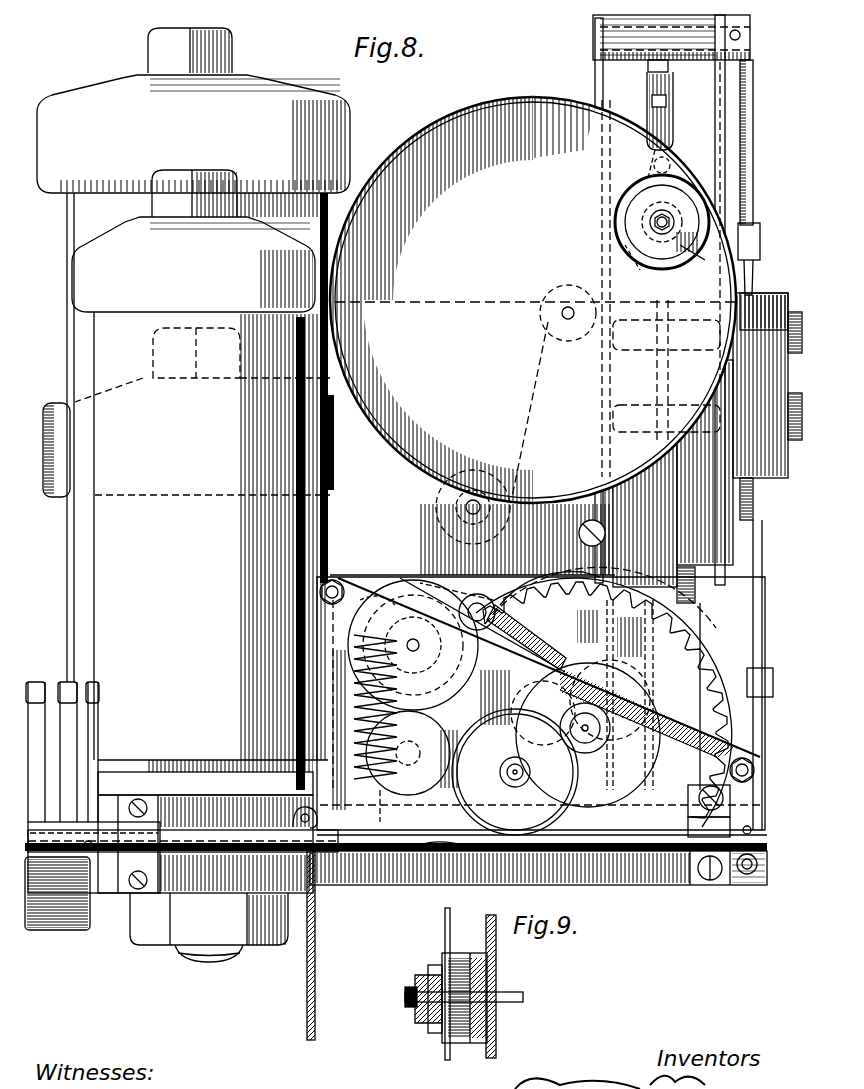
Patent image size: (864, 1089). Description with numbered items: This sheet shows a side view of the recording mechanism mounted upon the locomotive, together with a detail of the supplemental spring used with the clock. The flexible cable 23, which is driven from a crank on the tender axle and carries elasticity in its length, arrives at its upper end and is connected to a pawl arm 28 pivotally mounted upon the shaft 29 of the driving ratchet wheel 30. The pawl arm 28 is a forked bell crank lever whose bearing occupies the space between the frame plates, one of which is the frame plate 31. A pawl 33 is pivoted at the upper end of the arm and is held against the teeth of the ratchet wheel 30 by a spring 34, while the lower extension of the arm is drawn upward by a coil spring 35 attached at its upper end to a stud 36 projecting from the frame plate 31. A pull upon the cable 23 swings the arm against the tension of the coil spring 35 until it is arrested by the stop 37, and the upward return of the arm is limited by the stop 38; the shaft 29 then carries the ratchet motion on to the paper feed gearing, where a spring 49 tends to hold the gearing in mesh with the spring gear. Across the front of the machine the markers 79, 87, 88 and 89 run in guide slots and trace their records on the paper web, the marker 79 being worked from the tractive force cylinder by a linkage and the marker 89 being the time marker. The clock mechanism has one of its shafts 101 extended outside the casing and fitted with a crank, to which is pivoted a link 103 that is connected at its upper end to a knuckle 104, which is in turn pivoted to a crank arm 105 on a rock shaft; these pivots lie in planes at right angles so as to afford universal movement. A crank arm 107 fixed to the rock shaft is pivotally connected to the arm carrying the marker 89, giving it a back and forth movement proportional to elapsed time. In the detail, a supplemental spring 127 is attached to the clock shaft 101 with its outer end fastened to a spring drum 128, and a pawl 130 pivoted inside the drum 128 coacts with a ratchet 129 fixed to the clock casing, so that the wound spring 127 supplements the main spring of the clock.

In FIG. 8, the cable 23 is at (305, 1001).
In FIG. 8, the pawl arm 28 is at (183, 830).
In FIG. 8, the shaft 29 is at (600, 736).
In FIG. 8, the driving ratchet wheel 30 is at (604, 697).
In FIG. 8, the frame plate 31 is at (318, 617).
In FIG. 8, the pawl 33 is at (467, 569).
In FIG. 8, the spring 34 is at (549, 663).
In FIG. 8, the coil spring 35 is at (366, 766).
In FIG. 8, the stud 36 is at (372, 618).
In FIG. 8, the stop 37 is at (396, 860).
In FIG. 8, the stop 38 is at (437, 850).
In FIG. 8, the spring 49 is at (735, 738).
In FIG. 8, the marker 79 is at (750, 506).
In FIG. 8, the marker 87 is at (696, 592).
In FIG. 8, the marker 88 is at (797, 393).
In FIG. 8, the marker 89 is at (793, 313).
In FIG. 8, the shaft 101 is at (672, 252).
In FIG. 9, the shaft 101 is at (515, 992).
In FIG. 8, the link 103 is at (654, 166).
In FIG. 8, the knuckle 104 is at (670, 118).
In FIG. 8, the crank arm 105 is at (664, 62).
In FIG. 8, the crank arm 107 is at (752, 122).
In FIG. 9, the supplemental spring 127 is at (460, 955).
In FIG. 8, the spring drum 128 is at (628, 216).
In FIG. 9, the spring drum 128 is at (478, 1043).
In FIG. 9, the ratchet 129 is at (497, 1017).
In FIG. 9, the pawl 130 is at (494, 965).